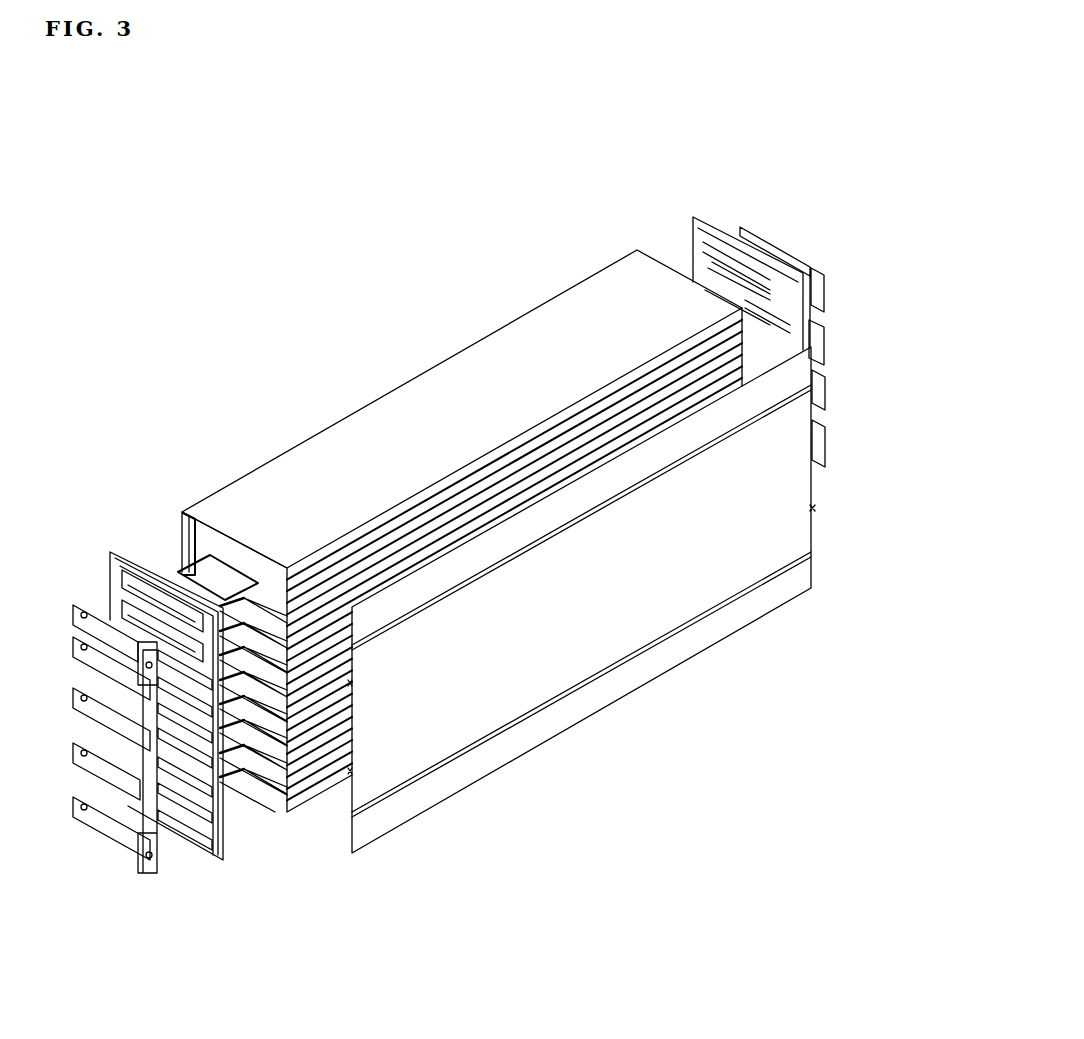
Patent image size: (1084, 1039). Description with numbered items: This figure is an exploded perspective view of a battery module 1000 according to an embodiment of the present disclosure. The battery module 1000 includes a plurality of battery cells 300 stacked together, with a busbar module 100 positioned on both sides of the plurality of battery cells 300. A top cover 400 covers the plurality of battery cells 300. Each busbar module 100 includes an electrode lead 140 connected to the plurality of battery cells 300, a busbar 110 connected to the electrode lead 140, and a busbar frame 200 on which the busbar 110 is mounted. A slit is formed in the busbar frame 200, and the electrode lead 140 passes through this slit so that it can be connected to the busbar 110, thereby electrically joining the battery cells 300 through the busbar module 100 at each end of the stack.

The battery module 1000 is at (358, 374).
The busbar module 100 is at (68, 418).
The busbar 110 is at (62, 622).
The electrode lead 140 is at (213, 578).
The busbar frame 200 is at (130, 548).
The battery cells 300 is at (305, 798).
The top cover 400 is at (637, 608).